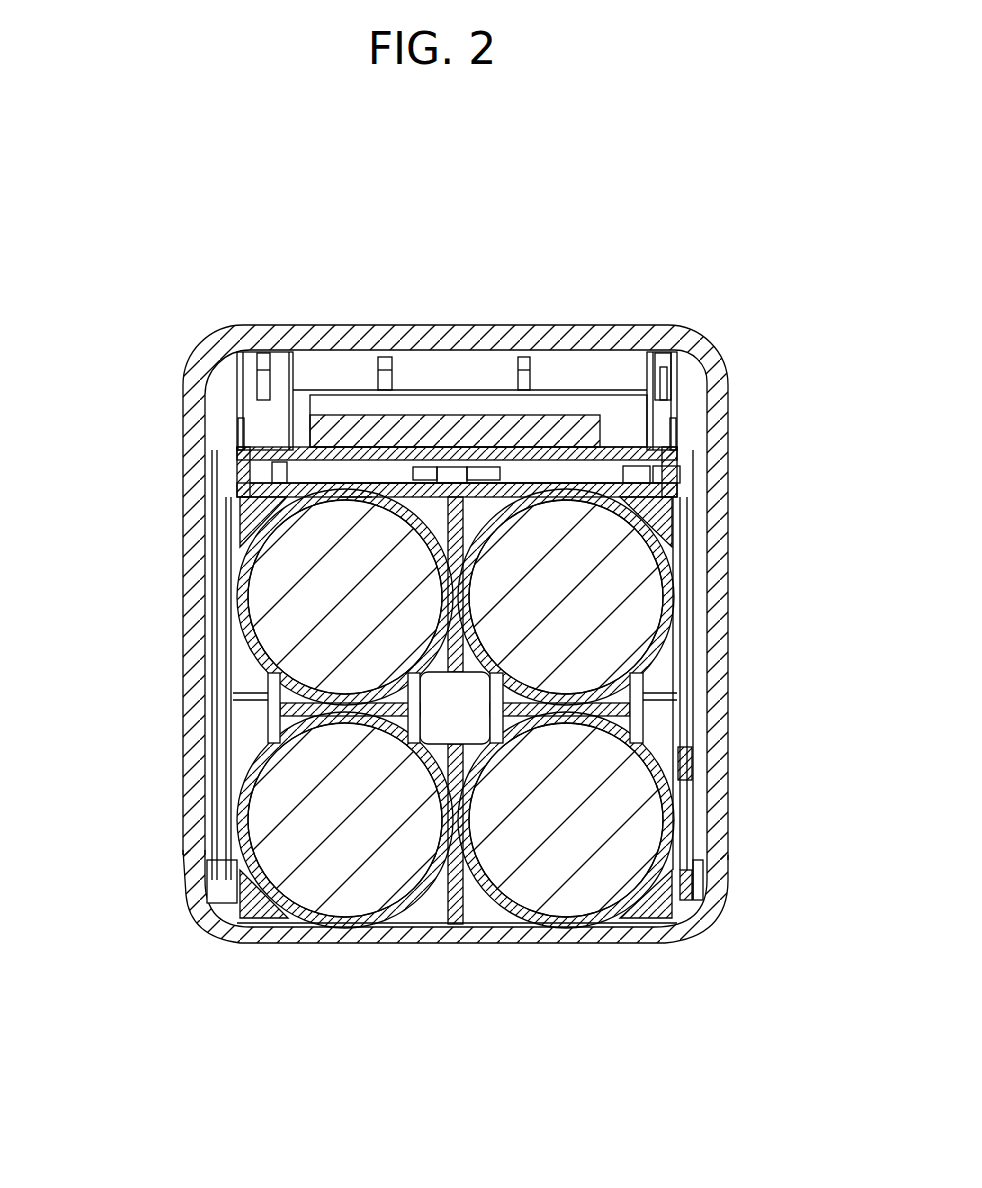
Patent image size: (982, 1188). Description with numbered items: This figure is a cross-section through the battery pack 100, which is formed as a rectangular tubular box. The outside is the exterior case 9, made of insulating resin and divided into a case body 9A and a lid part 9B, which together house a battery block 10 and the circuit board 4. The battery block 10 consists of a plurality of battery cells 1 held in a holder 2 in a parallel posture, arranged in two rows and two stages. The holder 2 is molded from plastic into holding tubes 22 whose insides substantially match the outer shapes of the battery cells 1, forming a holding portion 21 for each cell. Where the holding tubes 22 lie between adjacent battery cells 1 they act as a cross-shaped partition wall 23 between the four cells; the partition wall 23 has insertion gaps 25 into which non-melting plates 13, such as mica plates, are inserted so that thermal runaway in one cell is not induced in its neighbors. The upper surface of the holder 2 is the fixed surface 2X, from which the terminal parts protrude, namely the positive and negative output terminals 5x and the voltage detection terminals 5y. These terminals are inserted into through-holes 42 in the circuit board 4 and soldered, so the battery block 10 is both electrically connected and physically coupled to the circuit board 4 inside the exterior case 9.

The battery pack 100 is at (709, 223).
The battery cell 1 is at (559, 584).
The holder 2 is at (524, 237).
The holding tube 22 is at (345, 490).
The partition wall 23 is at (390, 482).
The fixed surface 2X is at (417, 619).
The circuit board 4 is at (548, 480).
The output terminal 5x is at (672, 352).
The voltage detection terminal 5y is at (260, 352).
The exterior case 9 is at (83, 583).
The case body 9A is at (193, 562).
The lid part 9B is at (197, 916).
The battery block 10 is at (557, 483).
The non-melting plate 13 is at (577, 690).
The holding portion 21 is at (247, 487).
The insertion gap 25 is at (556, 717).
The through-hole 42 is at (235, 417).